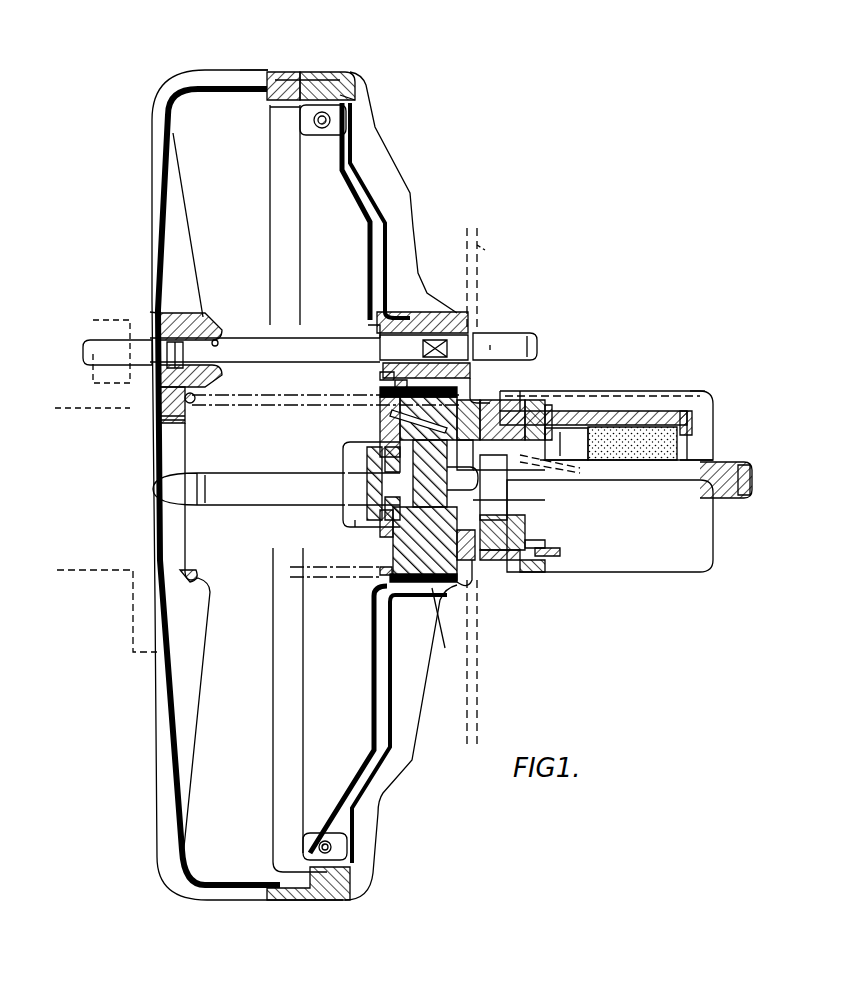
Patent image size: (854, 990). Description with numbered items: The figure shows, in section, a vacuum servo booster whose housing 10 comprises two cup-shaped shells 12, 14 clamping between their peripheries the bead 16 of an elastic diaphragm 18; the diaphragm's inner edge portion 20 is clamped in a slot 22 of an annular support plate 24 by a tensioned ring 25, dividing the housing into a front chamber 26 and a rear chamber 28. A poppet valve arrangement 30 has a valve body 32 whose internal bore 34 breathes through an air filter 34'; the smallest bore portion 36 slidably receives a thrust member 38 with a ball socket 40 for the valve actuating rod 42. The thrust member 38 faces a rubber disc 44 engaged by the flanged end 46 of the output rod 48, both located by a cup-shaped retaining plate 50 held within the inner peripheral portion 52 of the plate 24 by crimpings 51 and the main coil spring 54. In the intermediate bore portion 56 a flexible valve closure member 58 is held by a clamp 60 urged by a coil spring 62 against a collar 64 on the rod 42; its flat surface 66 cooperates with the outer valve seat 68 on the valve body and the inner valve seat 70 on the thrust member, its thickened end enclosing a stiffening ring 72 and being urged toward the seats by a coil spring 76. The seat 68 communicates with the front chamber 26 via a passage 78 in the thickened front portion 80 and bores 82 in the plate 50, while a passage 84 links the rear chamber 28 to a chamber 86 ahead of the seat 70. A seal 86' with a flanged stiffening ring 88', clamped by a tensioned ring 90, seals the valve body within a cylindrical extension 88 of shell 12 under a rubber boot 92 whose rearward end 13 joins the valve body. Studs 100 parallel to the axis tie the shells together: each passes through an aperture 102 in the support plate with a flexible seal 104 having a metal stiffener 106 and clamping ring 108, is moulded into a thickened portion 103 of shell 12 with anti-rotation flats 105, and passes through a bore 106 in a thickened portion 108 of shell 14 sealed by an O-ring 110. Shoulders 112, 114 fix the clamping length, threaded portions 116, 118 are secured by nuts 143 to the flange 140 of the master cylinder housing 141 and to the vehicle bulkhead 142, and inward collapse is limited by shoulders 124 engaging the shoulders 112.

The housing 10 is at (213, 60).
The housing part 12 is at (383, 192).
The rearward end of boot 13 is at (703, 440).
The housing part 14 is at (155, 176).
The outer peripheral bead portion 16 is at (322, 88).
The elastic diaphragm 18 is at (274, 94).
The inner peripheral edge portion 20 is at (352, 112).
The slot 22 is at (346, 140).
The annular support plate 24 is at (398, 216).
The tensioned ring 25 is at (348, 96).
The front chamber 26 is at (240, 220).
The rear chamber 28 is at (478, 474).
The poppet valve arrangement 30 is at (548, 400).
The valve body member 32 is at (592, 410).
The internal bore 34 is at (596, 413).
The air filter 34' is at (645, 439).
The smallest diameter portion 36 is at (366, 480).
The cylindrical thrust member 38 is at (420, 587).
The ball socket 40 is at (468, 565).
The valve actuating rod 42 is at (668, 470).
The rubber disc 44 is at (365, 530).
The flanged end 46 is at (345, 512).
The output rod 48 is at (262, 492).
The cup-shaped retaining plate 50 is at (350, 442).
The crimpings 51 is at (374, 602).
The cylindrical inner peripheral portion 52 is at (404, 372).
The main coil spring 54 is at (262, 408).
The intermediate bore portion 56 is at (532, 410).
The valve closure member 58 is at (503, 520).
The clamp 60 is at (632, 443).
The coil spring 62 is at (562, 470).
The collar 64 is at (588, 470).
The flat radially extending surface 66 is at (505, 410).
The outer cylindrical valve seat 68 is at (385, 420).
The inner cylindrical valve seat 70 is at (490, 575).
The annular stiffening ring 72 is at (518, 572).
The coil spring 76 is at (520, 472).
The passage 78 is at (420, 422).
The thickened front portion 80 is at (440, 605).
The bores 82 is at (385, 565).
The passage 84 is at (455, 585).
The chamber 86 is at (474, 426).
The fluid tight seal 86' is at (578, 528).
The cylindrical extension 88 is at (574, 373).
The flanged annular stiffening ring 88' is at (564, 583).
The tensioned ring 90 is at (560, 553).
The flexible rubber boot 92 is at (662, 390).
The studs 100 is at (310, 336).
The aperture 102 is at (378, 333).
The thickened portion 103 is at (440, 322).
The flexible seal 104 is at (378, 375).
The flats 105 is at (447, 345).
The metal stiffener 106 is at (405, 300).
The tensioned clamping ring 108 is at (398, 318).
The O-ring seals 110 is at (193, 318).
The shoulder 112 is at (123, 372).
The shoulder 114 is at (490, 340).
The screw-threaded end portion 116 is at (108, 348).
The screw-threaded end portion 118 is at (503, 350).
The shoulders 124 is at (183, 353).
The flange 140 is at (150, 312).
The master cylinder housing 141 is at (72, 575).
The vehicle bulkhead 142 is at (485, 250).
The nuts 143 is at (523, 305).